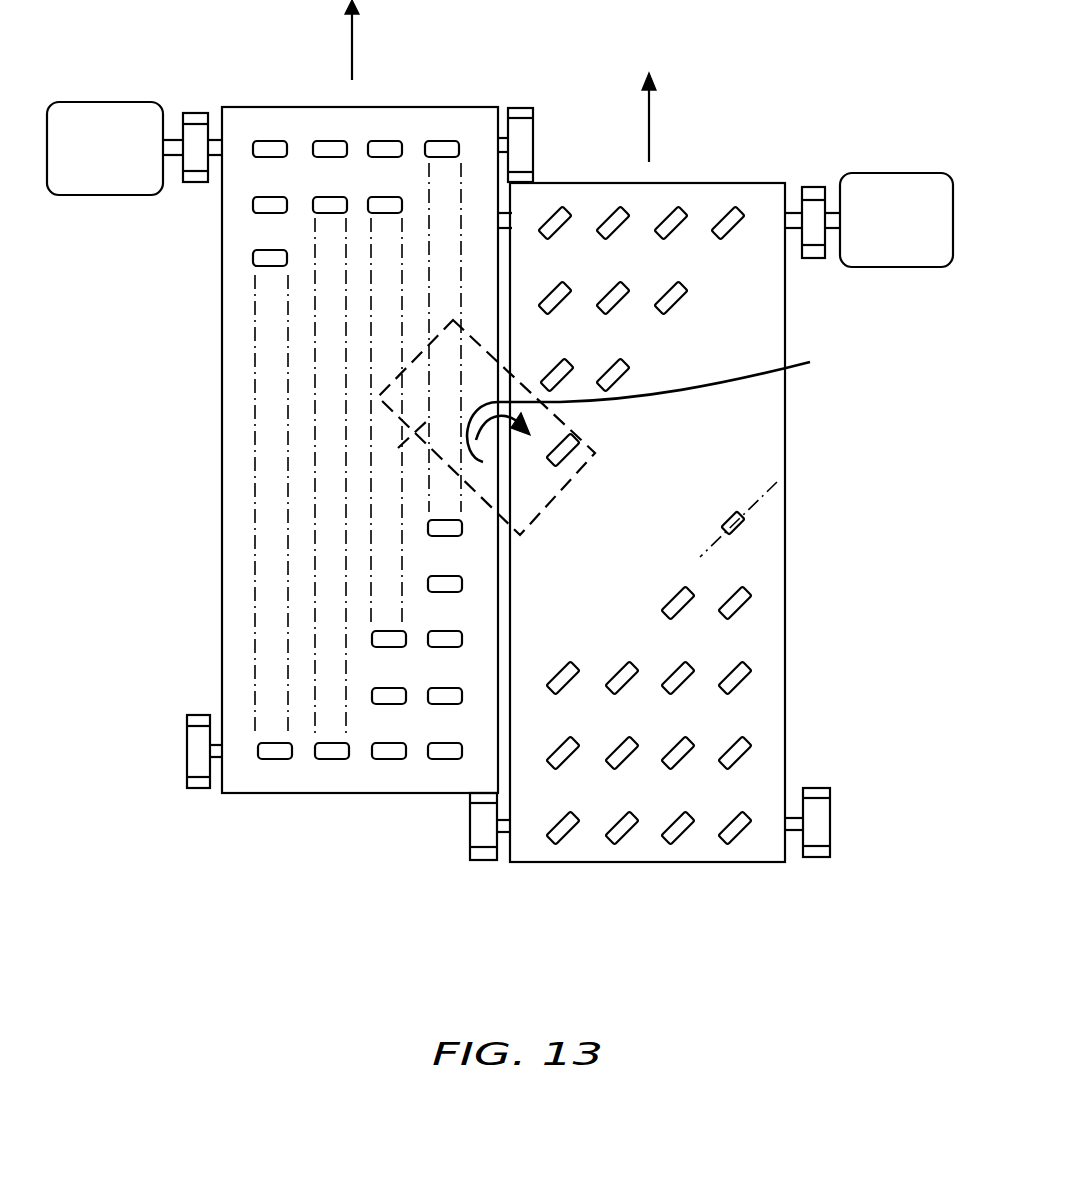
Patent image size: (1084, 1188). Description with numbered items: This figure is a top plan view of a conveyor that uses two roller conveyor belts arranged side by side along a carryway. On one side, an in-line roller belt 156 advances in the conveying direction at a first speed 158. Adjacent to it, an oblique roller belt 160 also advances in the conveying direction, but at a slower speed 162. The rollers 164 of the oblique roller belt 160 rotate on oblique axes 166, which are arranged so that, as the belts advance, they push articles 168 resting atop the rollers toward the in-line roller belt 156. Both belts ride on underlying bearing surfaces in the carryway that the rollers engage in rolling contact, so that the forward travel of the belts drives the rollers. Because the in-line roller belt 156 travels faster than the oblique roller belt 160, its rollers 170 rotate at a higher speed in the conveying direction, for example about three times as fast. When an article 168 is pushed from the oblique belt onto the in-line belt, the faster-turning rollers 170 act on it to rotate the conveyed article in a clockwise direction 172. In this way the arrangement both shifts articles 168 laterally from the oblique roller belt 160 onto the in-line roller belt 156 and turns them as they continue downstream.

The in-line roller belt 156 is at (225, 408).
The first speed 158 is at (352, 40).
The oblique roller belt 160 is at (770, 683).
The slower speed 162 is at (649, 133).
The rollers 164 is at (737, 602).
The oblique axes 166 is at (770, 505).
The articles 168 is at (428, 418).
The rollers 170 is at (253, 258).
The clockwise direction 172 is at (678, 400).